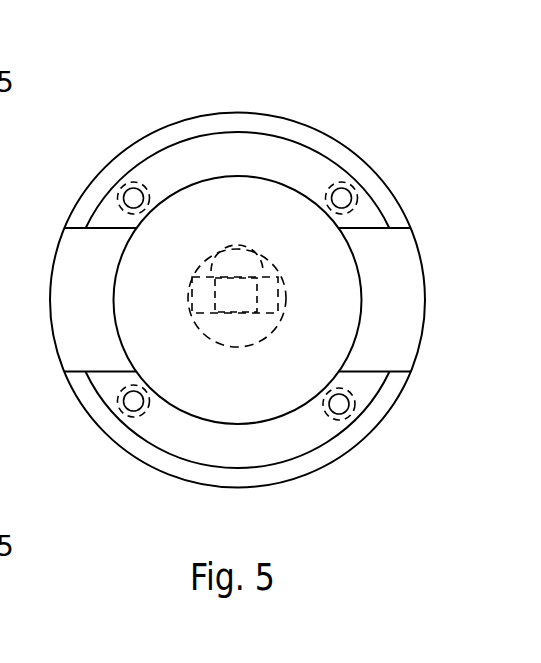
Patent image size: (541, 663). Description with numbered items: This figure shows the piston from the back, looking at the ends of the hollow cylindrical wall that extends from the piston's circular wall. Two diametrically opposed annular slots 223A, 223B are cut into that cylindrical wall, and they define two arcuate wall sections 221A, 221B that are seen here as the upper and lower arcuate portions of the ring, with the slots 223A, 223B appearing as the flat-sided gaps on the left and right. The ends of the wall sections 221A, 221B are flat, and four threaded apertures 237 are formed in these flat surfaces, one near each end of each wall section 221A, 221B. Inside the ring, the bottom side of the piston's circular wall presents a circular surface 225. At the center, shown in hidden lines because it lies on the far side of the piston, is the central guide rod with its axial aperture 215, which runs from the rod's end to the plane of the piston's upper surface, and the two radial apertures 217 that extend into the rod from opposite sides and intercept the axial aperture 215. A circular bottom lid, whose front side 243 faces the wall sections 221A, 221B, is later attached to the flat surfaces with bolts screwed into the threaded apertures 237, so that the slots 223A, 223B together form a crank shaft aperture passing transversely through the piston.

The axial aperture 215 is at (236, 314).
The radial apertures 217 is at (205, 292).
The arcuate wall section 221A is at (302, 170).
The arcuate wall section 221B is at (317, 423).
The annular slot 223A is at (87, 258).
The annular slot 223B is at (383, 253).
The circular surface 225 is at (335, 330).
The threaded apertures 237 is at (338, 406).
The front side 243 is at (345, 292).